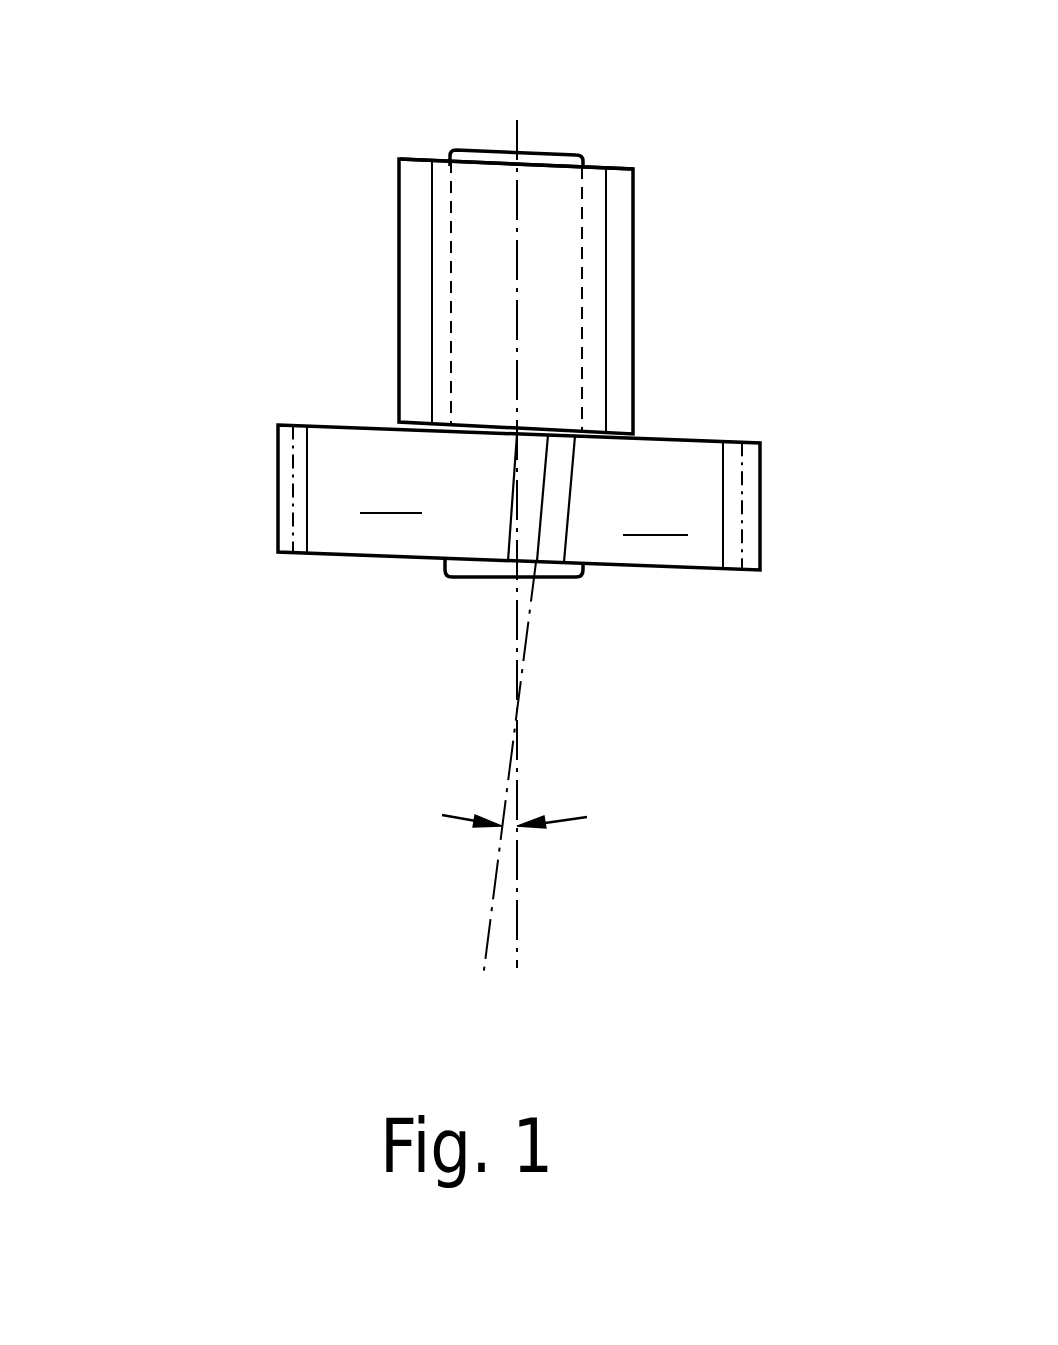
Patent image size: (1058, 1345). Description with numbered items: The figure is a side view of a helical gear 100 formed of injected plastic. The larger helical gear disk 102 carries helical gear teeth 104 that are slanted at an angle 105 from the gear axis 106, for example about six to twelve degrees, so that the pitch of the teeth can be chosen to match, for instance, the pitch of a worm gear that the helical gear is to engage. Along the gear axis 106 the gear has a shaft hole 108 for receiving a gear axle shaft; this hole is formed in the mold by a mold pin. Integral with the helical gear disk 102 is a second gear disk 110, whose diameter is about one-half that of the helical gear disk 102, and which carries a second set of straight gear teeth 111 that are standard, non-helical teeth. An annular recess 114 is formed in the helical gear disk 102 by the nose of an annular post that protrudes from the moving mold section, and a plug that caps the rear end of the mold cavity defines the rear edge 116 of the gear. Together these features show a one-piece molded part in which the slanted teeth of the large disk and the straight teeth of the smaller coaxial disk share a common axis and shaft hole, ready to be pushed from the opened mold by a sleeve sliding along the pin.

The helical gear 100 is at (489, 490).
The helical gear disk 102 is at (408, 501).
The helical gear teeth 104 is at (548, 578).
The angle 105 is at (515, 828).
The gear axis 106 is at (518, 133).
The shaft hole 108 is at (486, 110).
The second gear disk 110 is at (399, 272).
The straight gear teeth 111 is at (615, 390).
The annular recess 114 is at (524, 500).
The rear edge 116 is at (633, 169).